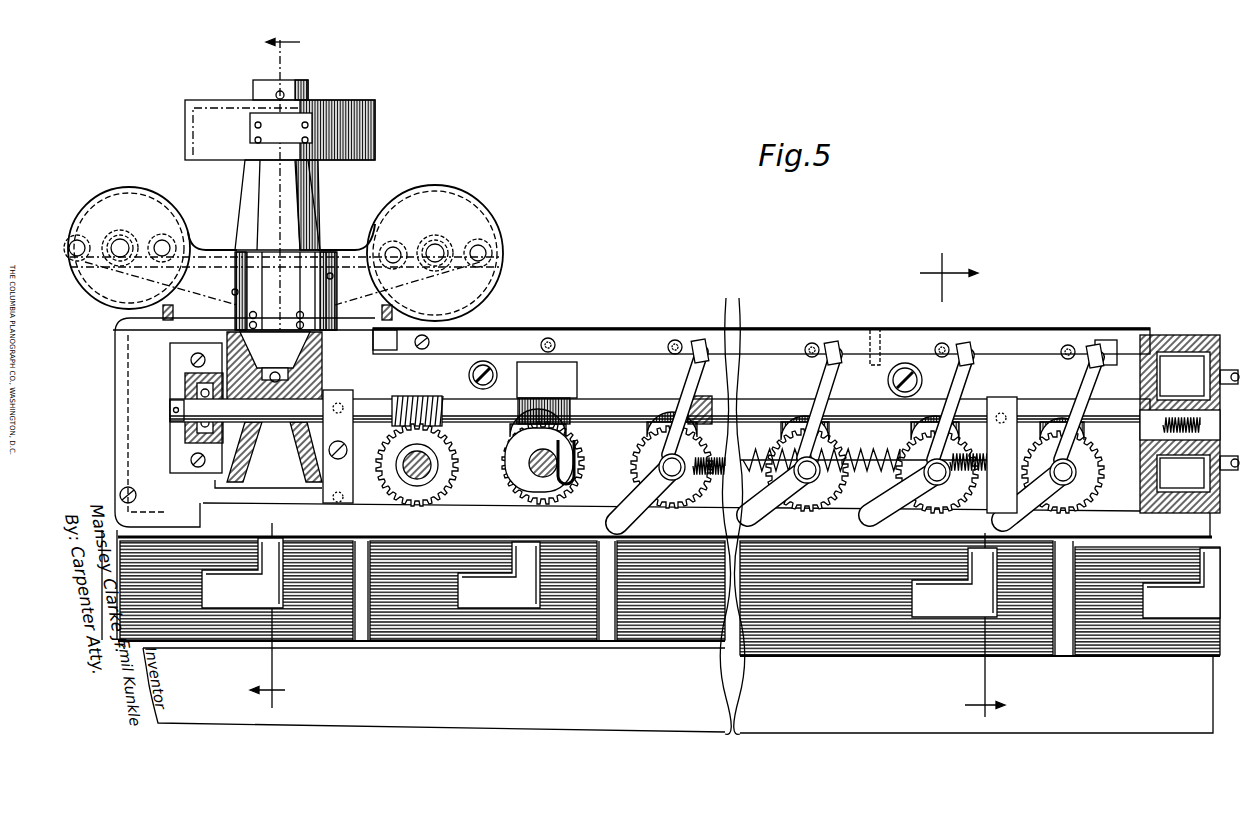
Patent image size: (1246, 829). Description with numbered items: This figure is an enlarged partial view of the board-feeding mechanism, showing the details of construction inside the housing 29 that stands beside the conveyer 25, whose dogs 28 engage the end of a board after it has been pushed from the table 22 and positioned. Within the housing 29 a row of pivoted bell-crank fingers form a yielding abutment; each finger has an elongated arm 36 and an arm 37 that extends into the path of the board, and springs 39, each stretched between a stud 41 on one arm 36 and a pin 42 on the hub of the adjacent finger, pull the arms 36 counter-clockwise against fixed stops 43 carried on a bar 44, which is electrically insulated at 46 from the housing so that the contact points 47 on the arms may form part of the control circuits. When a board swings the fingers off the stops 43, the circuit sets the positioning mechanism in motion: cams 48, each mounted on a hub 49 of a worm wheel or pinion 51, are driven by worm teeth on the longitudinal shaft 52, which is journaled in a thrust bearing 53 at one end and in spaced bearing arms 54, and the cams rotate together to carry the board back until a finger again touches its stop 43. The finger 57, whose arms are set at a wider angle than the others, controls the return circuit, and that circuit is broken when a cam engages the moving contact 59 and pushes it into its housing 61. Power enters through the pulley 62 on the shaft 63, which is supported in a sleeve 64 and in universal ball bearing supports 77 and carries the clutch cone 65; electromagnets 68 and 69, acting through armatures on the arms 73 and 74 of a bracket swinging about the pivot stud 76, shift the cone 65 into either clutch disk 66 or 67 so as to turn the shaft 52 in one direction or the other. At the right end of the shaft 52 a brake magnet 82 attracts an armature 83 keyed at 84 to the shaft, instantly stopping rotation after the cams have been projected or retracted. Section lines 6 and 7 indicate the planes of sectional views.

The section line 6- 6 is at (271, 365).
The section line 7- 7 is at (962, 485).
The table 22 is at (328, 722).
The conveyer 25 is at (453, 645).
The dogs 28 is at (532, 610).
The housing 29 is at (115, 445).
The arm 36 is at (810, 380).
The arm 37 is at (735, 514).
The springs 39 is at (887, 447).
The stud 41 is at (867, 457).
The stud or pin 42 is at (838, 505).
The fixed stops 43 is at (427, 328).
The bar 44 is at (423, 350).
The insulation 46 is at (625, 330).
The contact points 47 is at (708, 343).
The cams 48 is at (575, 436).
The hub 49 is at (946, 449).
The worm wheel or pinion 51 is at (500, 483).
The shaft 52 is at (606, 403).
The thrust bearing 53 is at (185, 432).
The bearing arms 54 is at (353, 396).
The finger 57 is at (700, 392).
The moving contact 59 is at (548, 405).
The housing 61 is at (533, 366).
The pulley 62 is at (376, 120).
The shaft 63 is at (272, 90).
The sleeve 64 is at (242, 142).
The clutch cone 65 is at (302, 347).
The clutch disk 66 is at (298, 457).
The clutch disk 67 is at (250, 468).
The electromagnet 68 is at (478, 213).
The electromagnet 69 is at (138, 190).
The arm 73 is at (330, 273).
The arm 74 is at (232, 290).
The pivot stud 76 is at (272, 228).
The universal ball bearing support 77 is at (318, 142).
The magnet 82 is at (1180, 370).
The armature 83 is at (1148, 340).
The key 84 is at (1125, 475).